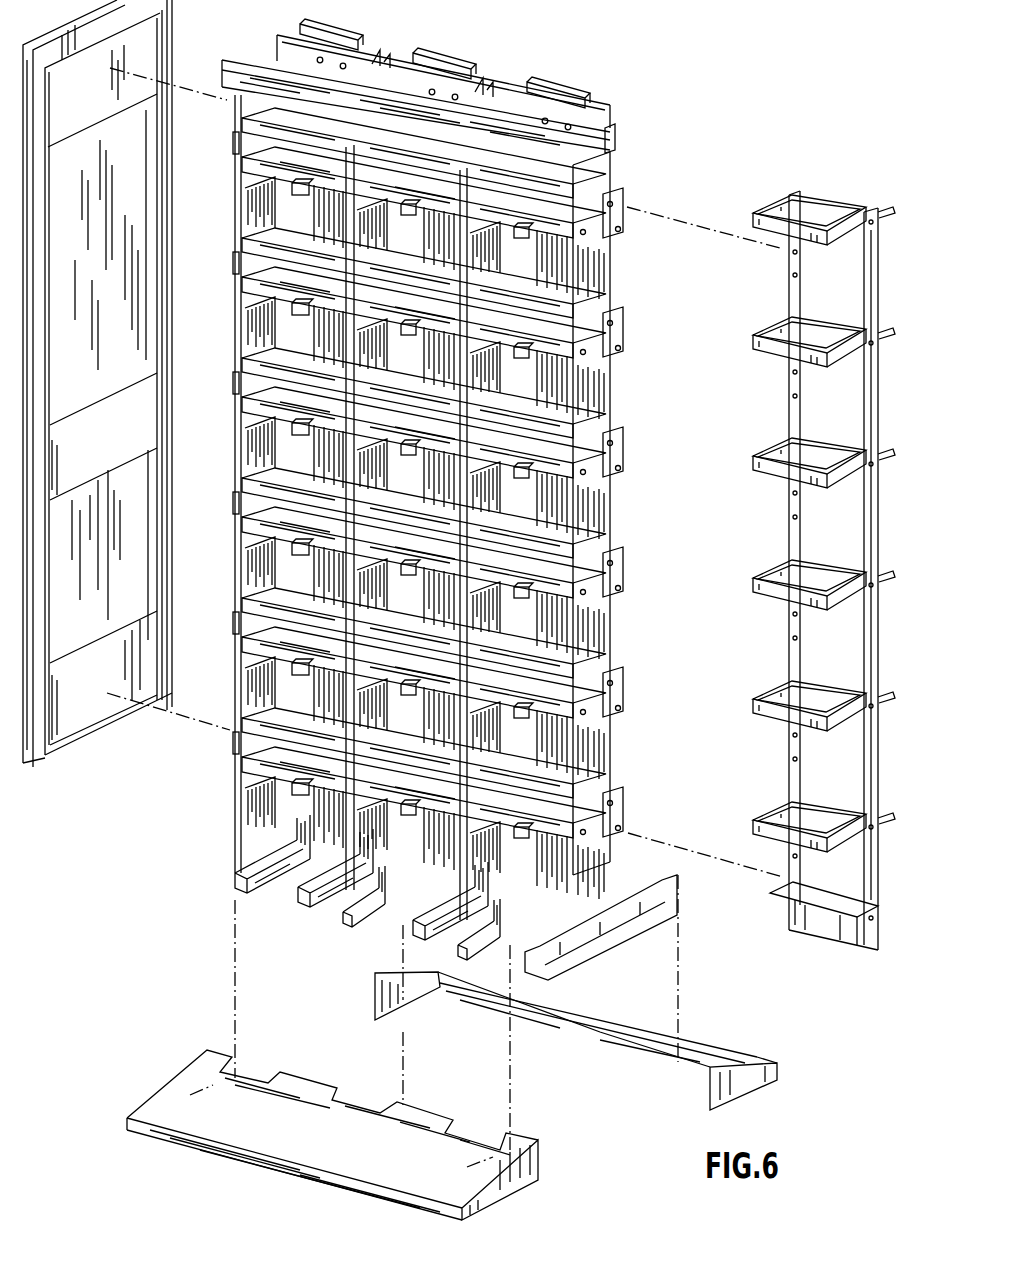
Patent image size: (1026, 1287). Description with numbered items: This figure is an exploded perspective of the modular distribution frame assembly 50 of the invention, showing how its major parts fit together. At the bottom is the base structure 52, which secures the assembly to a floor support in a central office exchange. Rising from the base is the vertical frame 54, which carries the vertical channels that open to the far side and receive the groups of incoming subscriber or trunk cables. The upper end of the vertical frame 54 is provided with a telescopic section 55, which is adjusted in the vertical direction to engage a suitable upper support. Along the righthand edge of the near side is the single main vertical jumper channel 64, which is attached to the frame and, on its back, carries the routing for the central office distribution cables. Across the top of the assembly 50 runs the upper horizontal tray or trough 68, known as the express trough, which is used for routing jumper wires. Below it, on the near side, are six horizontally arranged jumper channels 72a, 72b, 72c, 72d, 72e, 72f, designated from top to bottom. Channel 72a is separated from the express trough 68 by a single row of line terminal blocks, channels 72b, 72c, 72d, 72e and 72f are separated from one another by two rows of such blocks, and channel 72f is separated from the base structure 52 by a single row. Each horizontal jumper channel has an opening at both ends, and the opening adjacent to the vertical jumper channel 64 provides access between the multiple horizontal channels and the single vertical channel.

The modular distribution frame assembly 50 is at (640, 70).
The base structure 52 is at (302, 1143).
The vertical frame 54 is at (320, 820).
The telescopic section 55 is at (337, 25).
The main vertical jumper channel 64 is at (834, 290).
The upper horizontal tray or trough 68 is at (600, 147).
The horizontal jumper channel 72a is at (610, 243).
The horizontal jumper channel 72b is at (618, 347).
The horizontal jumper channel 72c is at (617, 475).
The horizontal jumper channel 72d is at (600, 603).
The horizontal jumper channel 72e is at (610, 717).
The horizontal jumper channel 72f is at (593, 832).